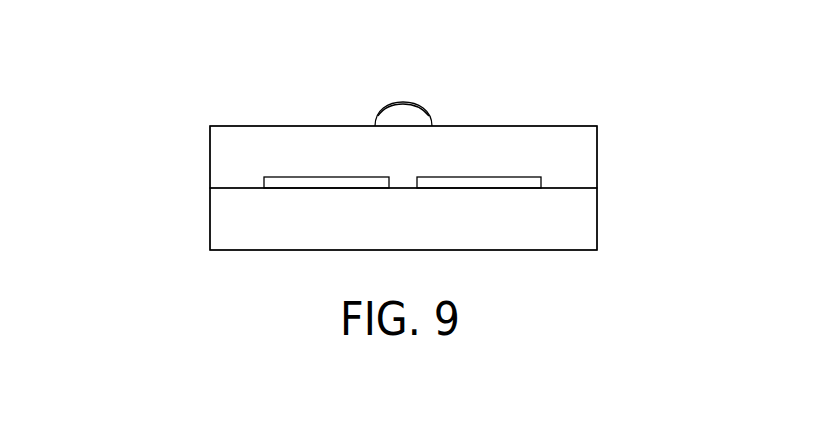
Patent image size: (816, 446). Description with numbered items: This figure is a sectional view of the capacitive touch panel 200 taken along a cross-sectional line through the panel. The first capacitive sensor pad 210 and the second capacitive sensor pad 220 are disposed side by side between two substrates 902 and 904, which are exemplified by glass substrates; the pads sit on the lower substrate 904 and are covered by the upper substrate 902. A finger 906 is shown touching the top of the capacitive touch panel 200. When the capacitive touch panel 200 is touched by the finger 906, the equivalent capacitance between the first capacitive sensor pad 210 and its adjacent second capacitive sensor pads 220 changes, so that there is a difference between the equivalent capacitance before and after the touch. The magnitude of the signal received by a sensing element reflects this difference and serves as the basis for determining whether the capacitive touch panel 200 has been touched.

The capacitive touch panel 200 is at (168, 177).
The first capacitive sensor pad 210 is at (517, 180).
The second capacitive sensor pad 220 is at (288, 180).
The substrate 902 is at (597, 157).
The substrate 904 is at (597, 218).
The finger 906 is at (432, 108).